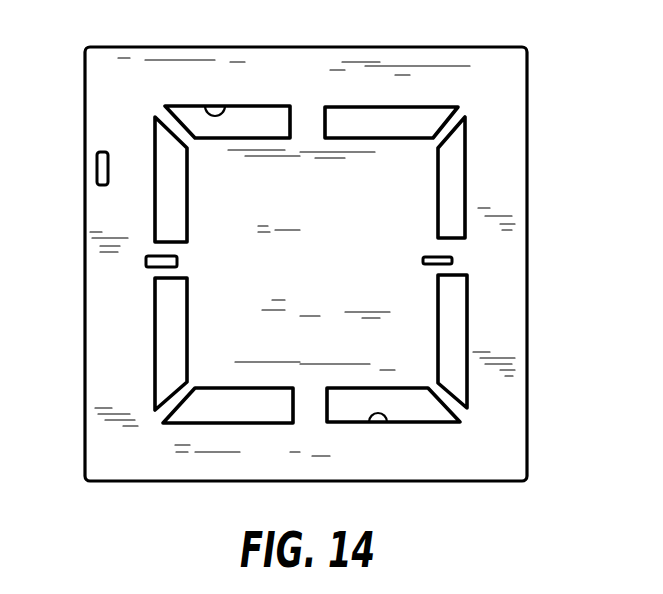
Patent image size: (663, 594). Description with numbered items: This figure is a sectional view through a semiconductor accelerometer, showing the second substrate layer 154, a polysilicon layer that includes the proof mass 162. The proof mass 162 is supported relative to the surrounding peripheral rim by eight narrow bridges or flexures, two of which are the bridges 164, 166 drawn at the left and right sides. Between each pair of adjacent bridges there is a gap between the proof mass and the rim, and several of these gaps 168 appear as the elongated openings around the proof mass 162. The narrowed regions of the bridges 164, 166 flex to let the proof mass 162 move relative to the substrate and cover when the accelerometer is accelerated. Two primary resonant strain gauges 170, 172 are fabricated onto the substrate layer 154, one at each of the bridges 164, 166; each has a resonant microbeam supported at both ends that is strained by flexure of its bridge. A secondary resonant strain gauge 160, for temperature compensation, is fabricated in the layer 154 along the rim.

The second substrate layer 154 is at (370, 63).
The secondary resonant strain gauge 160 is at (100, 168).
The proof mass 162 is at (311, 262).
The bridge 164 is at (180, 268).
The bridge 166 is at (442, 248).
The gap 168 is at (227, 107).
The primary resonant strain gauge 170 is at (177, 260).
The primary resonant strain gauge 172 is at (432, 265).